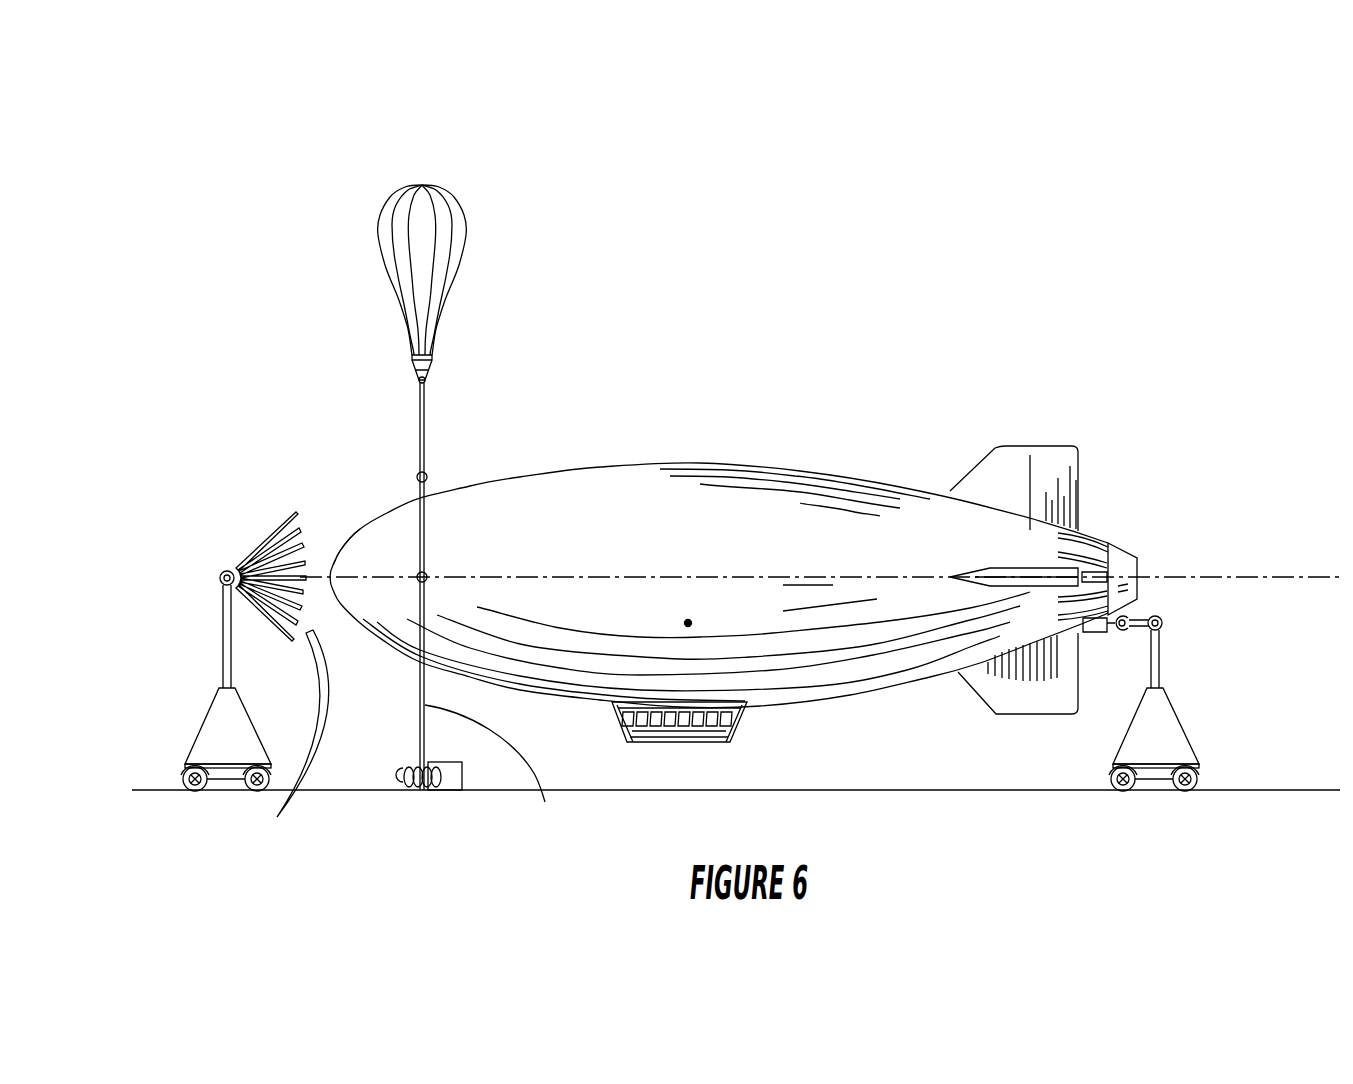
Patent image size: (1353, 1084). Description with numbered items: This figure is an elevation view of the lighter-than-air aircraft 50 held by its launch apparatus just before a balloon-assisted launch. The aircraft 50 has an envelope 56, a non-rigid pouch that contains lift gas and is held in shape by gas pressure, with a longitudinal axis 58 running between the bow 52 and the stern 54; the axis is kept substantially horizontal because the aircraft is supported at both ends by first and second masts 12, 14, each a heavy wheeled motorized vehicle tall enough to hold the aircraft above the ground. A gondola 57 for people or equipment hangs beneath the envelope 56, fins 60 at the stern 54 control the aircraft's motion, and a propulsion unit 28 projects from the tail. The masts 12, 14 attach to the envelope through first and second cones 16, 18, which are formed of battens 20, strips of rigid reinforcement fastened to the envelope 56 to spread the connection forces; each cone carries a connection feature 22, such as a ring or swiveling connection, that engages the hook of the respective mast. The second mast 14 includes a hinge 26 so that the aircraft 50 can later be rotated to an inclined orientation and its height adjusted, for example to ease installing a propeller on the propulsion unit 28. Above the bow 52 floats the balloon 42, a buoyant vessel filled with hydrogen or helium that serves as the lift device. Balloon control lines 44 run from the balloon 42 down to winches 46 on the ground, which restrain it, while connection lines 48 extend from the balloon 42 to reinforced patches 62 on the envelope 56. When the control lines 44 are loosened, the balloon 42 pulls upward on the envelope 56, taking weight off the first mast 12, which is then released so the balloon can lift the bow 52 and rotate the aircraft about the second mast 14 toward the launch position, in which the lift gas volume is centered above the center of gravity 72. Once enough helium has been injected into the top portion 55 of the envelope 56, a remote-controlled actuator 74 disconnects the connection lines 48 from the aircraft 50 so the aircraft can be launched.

The first mast 12 is at (203, 722).
The second mast 14 is at (1180, 733).
The first cone 16 is at (237, 570).
The second cone 18 is at (1092, 535).
The battens 20 is at (282, 814).
The connection feature 22 is at (220, 577).
The hinge 26 is at (1163, 620).
The propulsion unit 28 is at (1137, 560).
The balloon 42 is at (428, 186).
The balloon control lines 44 is at (545, 802).
The winches 46 is at (420, 790).
The connection lines 48 is at (343, 547).
The lighter-than-air aircraft 50 is at (753, 367).
The bow 52 is at (420, 546).
The stern 54 is at (1043, 525).
The top portion of the envelope 55 is at (752, 467).
The envelope 56 is at (647, 465).
The gondola 57 is at (678, 742).
The longitudinal axis 58 is at (1195, 577).
The fins 60 is at (1012, 448).
The reinforced patches 62 is at (430, 577).
The center of gravity 72 is at (688, 623).
The actuator 74 is at (427, 574).